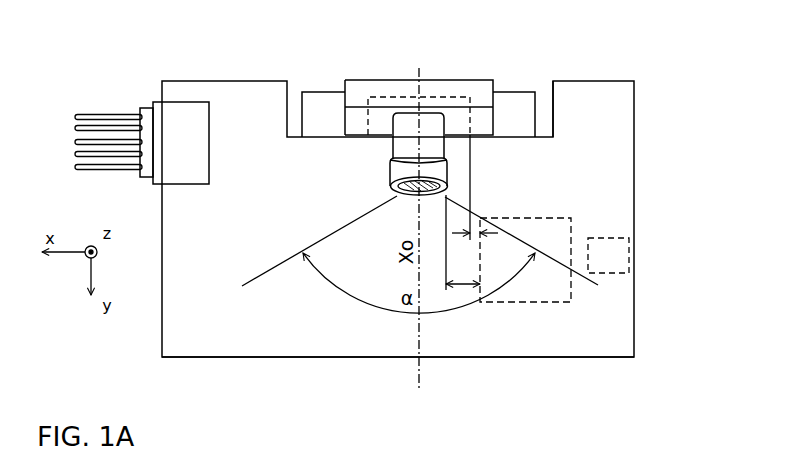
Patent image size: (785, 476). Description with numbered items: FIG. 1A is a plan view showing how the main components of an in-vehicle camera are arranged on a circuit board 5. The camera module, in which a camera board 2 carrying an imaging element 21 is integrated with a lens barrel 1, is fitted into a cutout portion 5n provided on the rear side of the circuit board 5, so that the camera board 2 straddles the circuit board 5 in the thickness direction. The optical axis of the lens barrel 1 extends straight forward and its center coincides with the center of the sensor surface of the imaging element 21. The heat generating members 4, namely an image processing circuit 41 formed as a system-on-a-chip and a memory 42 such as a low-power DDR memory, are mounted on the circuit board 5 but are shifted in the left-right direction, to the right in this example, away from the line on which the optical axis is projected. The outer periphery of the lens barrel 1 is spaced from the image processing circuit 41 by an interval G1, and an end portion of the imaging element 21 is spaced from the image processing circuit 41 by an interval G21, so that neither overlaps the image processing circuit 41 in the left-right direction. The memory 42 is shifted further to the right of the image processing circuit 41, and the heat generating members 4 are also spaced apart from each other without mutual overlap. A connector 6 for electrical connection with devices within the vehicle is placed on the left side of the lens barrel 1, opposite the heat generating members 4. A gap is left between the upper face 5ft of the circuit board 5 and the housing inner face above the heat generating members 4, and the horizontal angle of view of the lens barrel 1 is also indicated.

The lens barrel 1 is at (405, 150).
The camera board 2 is at (437, 80).
The imaging element 21 is at (462, 97).
The heat generating members 4 is at (615, 265).
The image processing circuit 41 is at (555, 293).
The memory 42 is at (629, 255).
The circuit board 5 is at (598, 193).
The cutout portion 5n is at (543, 117).
The upper face of the circuit board 5ft is at (270, 317).
The connector 6 is at (183, 143).
The interval G1 is at (463, 271).
The interval G21 is at (477, 230).